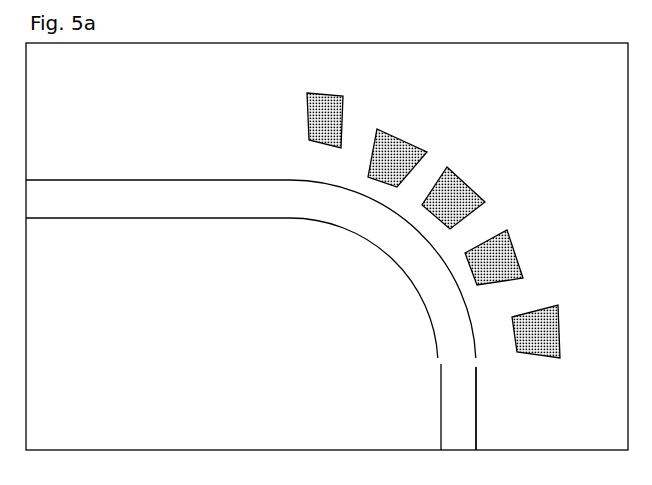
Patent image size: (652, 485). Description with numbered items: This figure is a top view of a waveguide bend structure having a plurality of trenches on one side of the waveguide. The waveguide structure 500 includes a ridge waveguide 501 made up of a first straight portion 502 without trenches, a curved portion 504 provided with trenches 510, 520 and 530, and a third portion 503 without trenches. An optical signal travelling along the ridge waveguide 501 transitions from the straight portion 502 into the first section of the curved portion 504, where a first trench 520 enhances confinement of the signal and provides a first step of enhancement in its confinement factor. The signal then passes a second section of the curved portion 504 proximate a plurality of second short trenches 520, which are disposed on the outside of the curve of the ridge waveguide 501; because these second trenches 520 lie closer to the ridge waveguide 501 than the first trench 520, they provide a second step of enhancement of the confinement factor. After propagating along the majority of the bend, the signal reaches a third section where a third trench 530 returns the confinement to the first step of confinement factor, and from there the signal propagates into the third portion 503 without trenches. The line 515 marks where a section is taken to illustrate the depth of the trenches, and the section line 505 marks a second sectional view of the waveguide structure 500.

The waveguide structure 500 is at (327, 246).
The ridge waveguide 501 is at (72, 173).
The first straight portion 502 is at (258, 440).
The third portion 503 is at (487, 440).
The curved portion 504 is at (383, 315).
The section line 505 is at (570, 272).
The trenches 510 is at (522, 246).
The line 515 is at (328, 60).
The first trench 520 is at (299, 118).
The third trench 530 is at (502, 333).